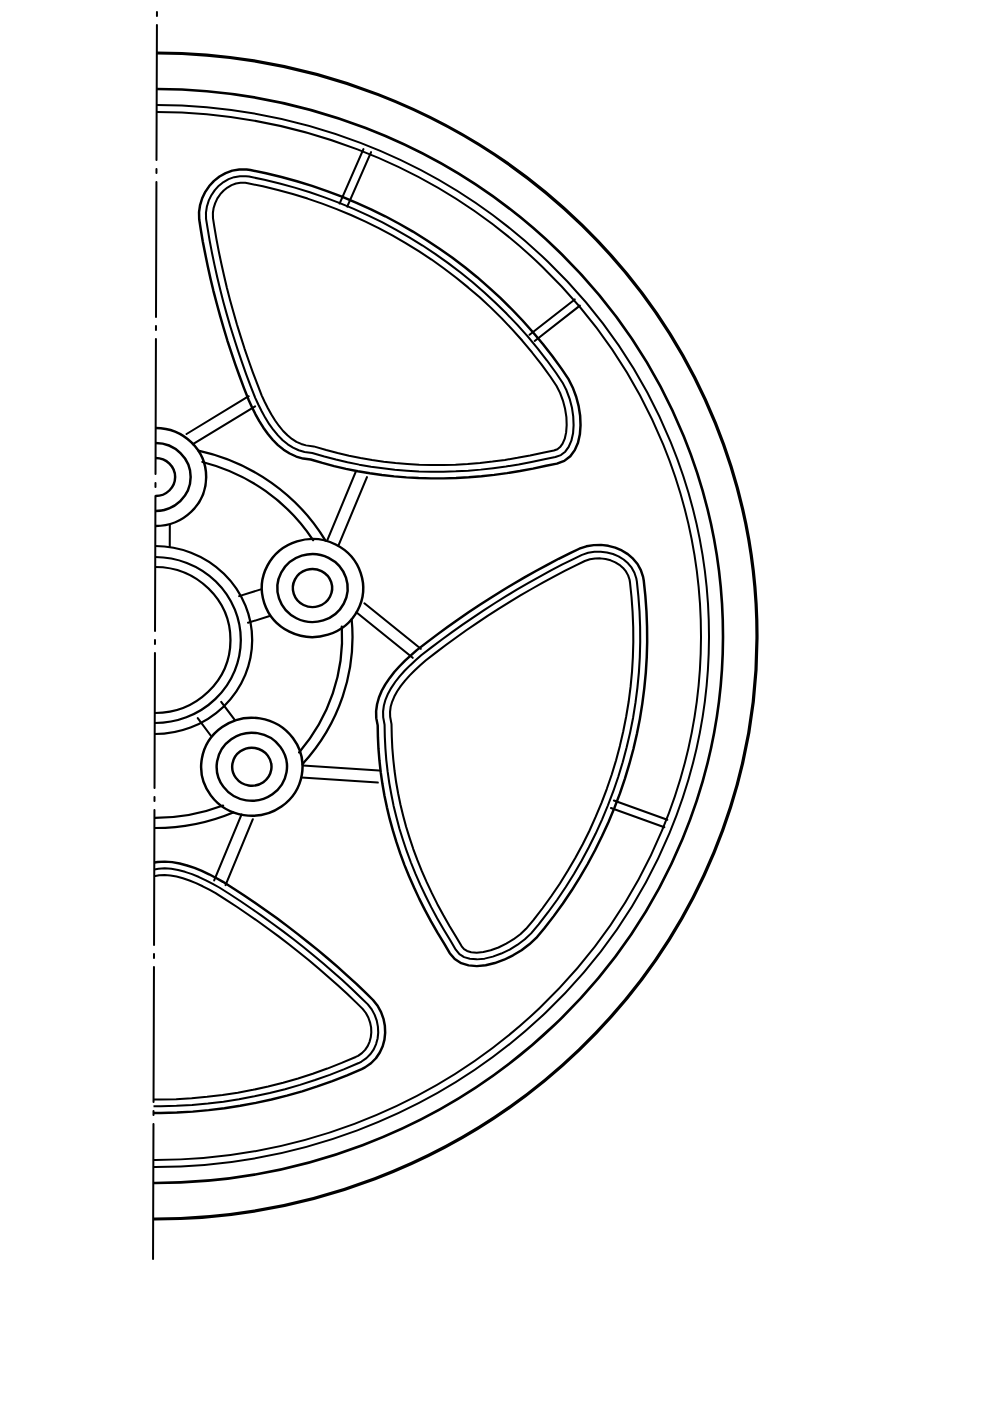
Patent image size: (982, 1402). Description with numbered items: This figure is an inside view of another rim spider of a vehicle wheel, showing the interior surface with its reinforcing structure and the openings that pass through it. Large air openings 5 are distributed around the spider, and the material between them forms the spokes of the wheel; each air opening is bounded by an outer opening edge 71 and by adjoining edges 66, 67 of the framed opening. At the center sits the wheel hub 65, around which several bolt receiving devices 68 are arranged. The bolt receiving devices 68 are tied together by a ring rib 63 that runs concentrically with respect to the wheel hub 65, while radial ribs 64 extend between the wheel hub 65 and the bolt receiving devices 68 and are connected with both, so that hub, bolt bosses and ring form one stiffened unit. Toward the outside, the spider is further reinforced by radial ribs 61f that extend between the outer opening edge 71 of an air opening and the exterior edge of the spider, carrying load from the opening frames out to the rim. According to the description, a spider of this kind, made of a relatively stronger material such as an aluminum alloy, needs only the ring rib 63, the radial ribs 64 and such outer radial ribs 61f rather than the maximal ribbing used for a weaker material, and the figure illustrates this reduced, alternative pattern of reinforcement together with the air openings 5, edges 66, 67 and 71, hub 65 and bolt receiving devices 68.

The air opening 5 is at (524, 798).
The radial rib 61f is at (325, 113).
The ring rib 63 is at (342, 713).
The radial rib 64 is at (222, 722).
The wheel hub 65 is at (218, 557).
The window opening 66 is at (524, 591).
The window frame 67 is at (455, 465).
The bolt receiving device 68 is at (270, 790).
The outer opening edge 71 is at (402, 226).